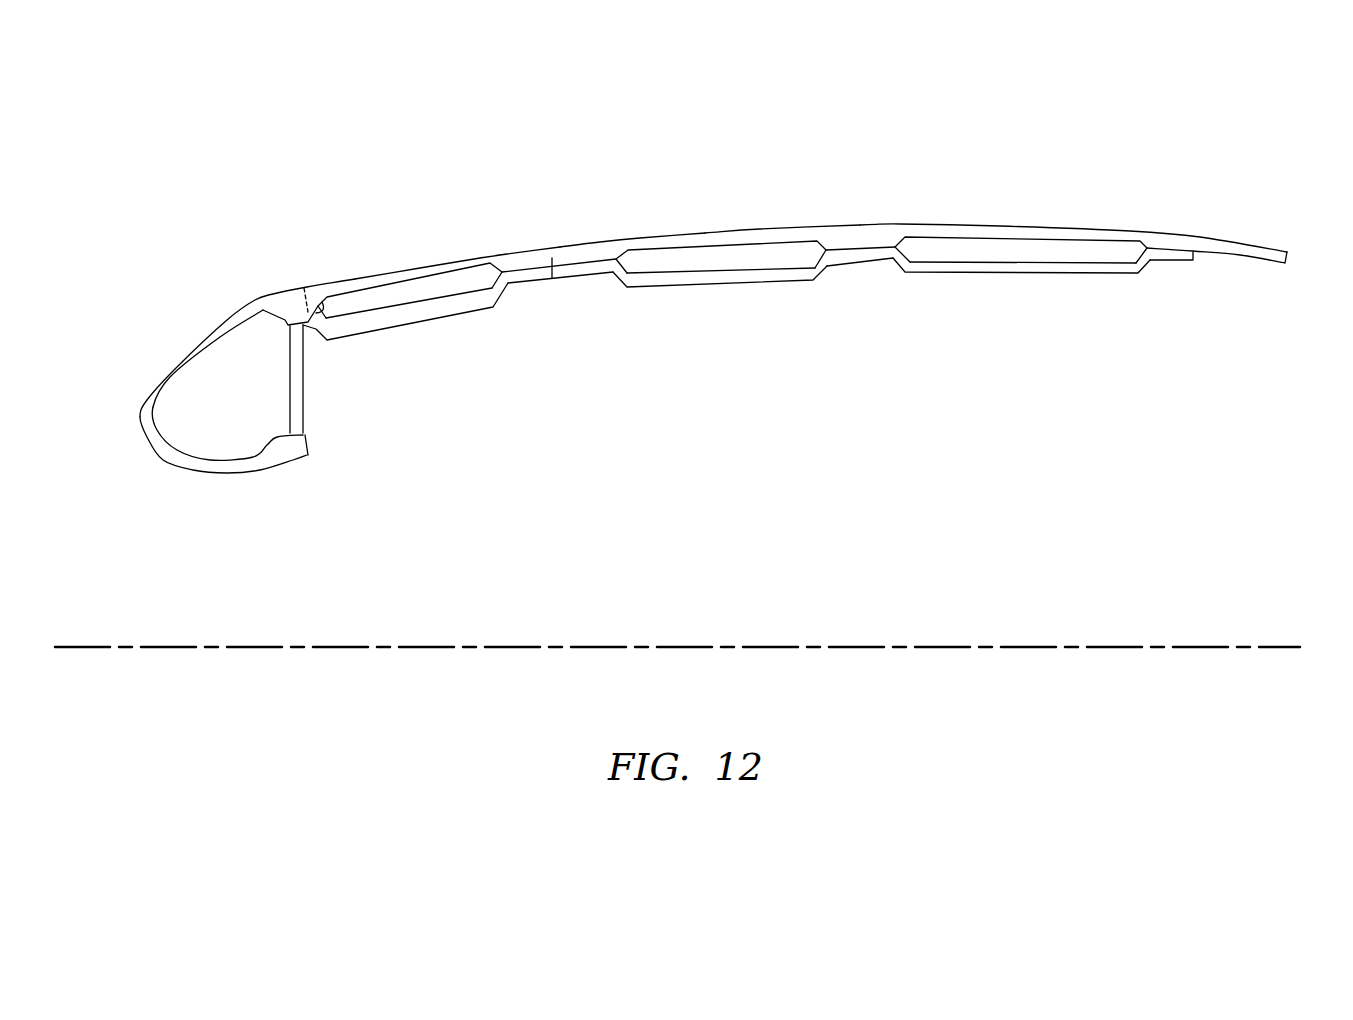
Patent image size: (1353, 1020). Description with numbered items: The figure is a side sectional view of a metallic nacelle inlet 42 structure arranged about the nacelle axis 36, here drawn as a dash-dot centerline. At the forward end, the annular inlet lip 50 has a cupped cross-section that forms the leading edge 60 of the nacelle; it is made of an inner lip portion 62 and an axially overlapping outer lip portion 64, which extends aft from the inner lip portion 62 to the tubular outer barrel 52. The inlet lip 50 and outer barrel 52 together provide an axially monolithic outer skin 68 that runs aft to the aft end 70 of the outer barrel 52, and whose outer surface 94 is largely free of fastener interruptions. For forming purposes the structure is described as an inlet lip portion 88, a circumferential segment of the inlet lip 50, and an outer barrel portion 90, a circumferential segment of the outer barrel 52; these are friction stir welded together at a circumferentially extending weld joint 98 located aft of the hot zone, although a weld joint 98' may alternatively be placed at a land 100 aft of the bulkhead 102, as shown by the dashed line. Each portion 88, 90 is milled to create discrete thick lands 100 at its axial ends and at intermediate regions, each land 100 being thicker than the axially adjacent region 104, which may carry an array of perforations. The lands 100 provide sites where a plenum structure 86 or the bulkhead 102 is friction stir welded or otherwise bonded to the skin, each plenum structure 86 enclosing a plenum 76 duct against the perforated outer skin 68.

The axis 36 is at (272, 648).
The nacelle inlet 42 is at (340, 163).
The inlet lip 50 is at (153, 470).
The outer barrel 52 is at (768, 213).
The leading edge 60 is at (140, 423).
The inner lip portion 62 is at (213, 473).
The outer lip portion 64 is at (188, 340).
The outer skin 68 is at (420, 268).
The aft end of the outer barrel 70 is at (1290, 257).
The plenum 76 is at (387, 323).
The plenum structure 86 is at (437, 323).
The inlet lip portion 88 is at (305, 278).
The outer barrel portion 90 is at (848, 218).
The outer surface 94 is at (655, 237).
The weld joint 98 is at (552, 292).
The weld joint 98' is at (329, 338).
The land 100 is at (587, 260).
The bulkhead 102 is at (297, 393).
The axially adjacent region 104 is at (378, 277).